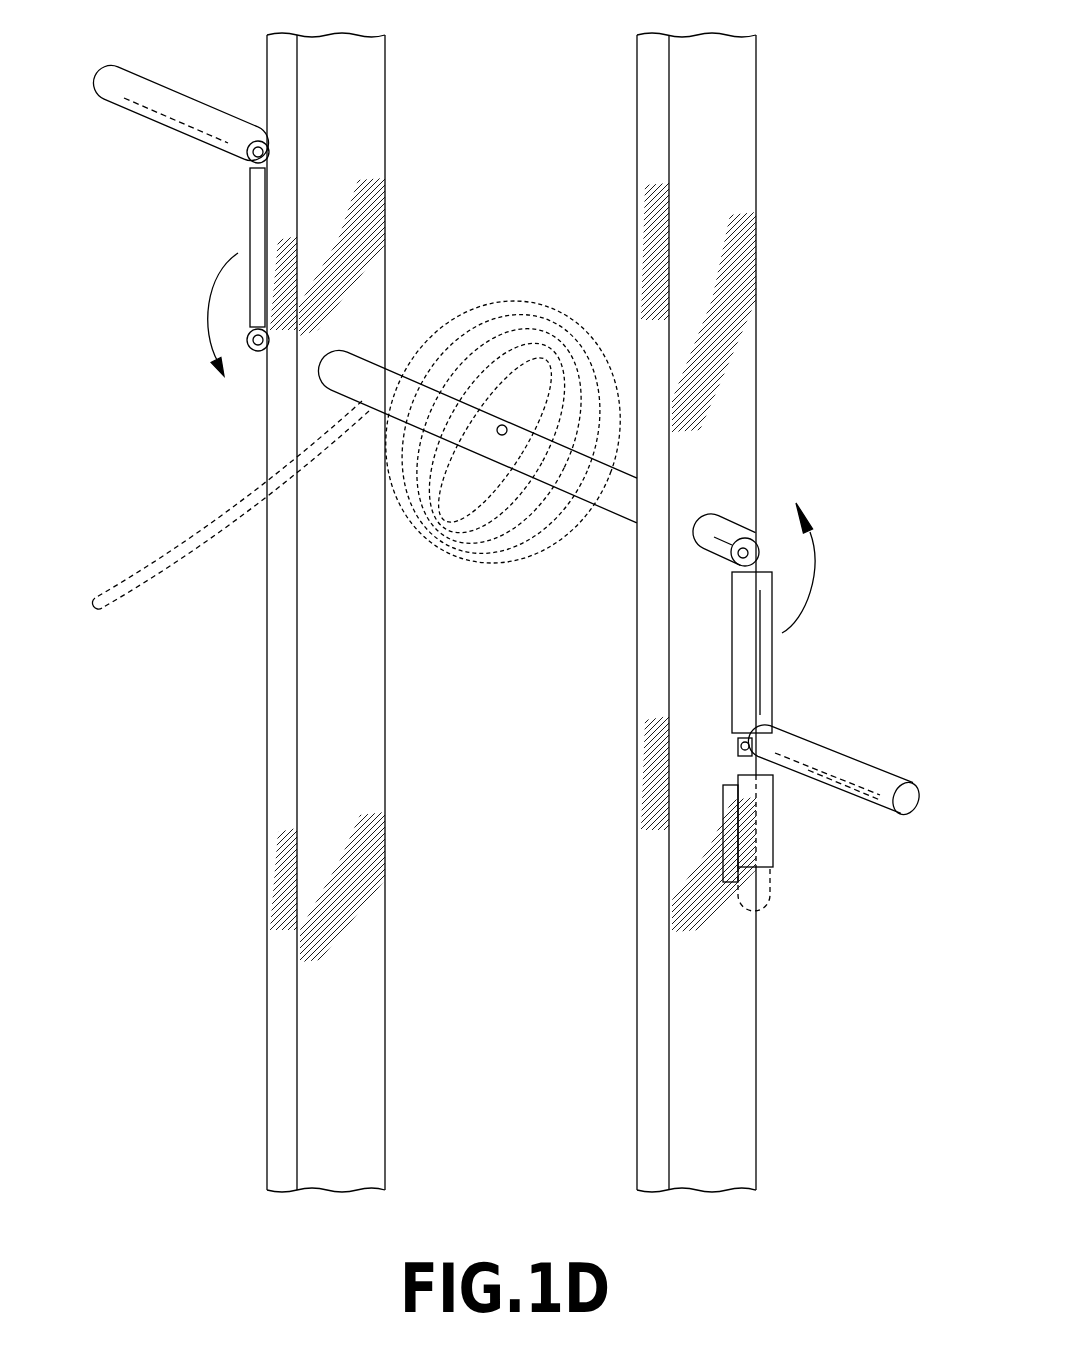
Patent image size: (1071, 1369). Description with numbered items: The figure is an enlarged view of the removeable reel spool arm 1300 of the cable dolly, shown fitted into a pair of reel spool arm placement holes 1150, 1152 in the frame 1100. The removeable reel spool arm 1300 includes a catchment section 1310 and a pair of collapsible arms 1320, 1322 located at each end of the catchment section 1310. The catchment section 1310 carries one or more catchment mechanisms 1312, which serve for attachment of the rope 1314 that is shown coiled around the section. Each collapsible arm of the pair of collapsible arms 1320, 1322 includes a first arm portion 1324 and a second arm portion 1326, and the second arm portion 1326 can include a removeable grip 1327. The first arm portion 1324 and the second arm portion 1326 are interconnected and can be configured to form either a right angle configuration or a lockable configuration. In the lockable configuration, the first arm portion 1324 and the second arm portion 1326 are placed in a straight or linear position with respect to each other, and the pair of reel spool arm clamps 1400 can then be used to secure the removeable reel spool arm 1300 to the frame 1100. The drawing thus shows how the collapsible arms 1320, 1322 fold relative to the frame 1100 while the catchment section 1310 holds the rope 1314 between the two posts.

The frame 1100 is at (282, 1047).
The removeable reel spool arm 1300 is at (483, 594).
The collapsible arm 1320 is at (147, 197).
The removeable grip 1327 is at (148, 108).
The first arm portion 1324 is at (220, 148).
The second arm portion 1326 is at (252, 237).
The catchment section 1310 is at (629, 267).
The catchment mechanism 1312 is at (507, 433).
The rope 1314 is at (183, 540).
The reel spool arm placement hole 1152 is at (330, 368).
The reel spool arm placement hole 1150 is at (723, 520).
The collapsible arm 1322 is at (808, 560).
The reel spool arm clamp 1400 is at (748, 837).